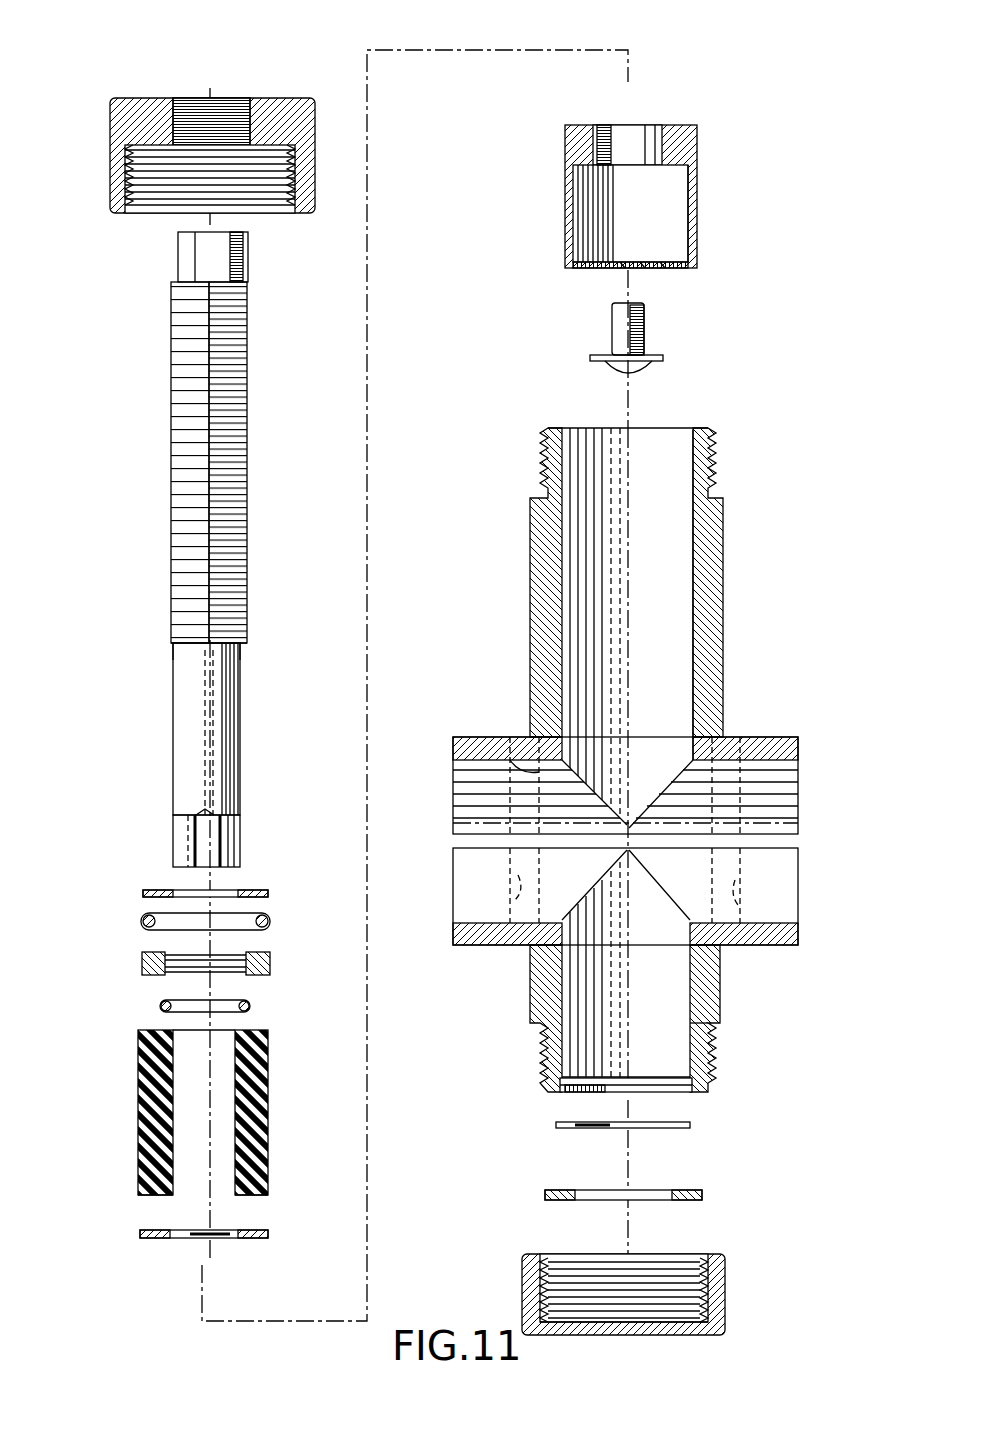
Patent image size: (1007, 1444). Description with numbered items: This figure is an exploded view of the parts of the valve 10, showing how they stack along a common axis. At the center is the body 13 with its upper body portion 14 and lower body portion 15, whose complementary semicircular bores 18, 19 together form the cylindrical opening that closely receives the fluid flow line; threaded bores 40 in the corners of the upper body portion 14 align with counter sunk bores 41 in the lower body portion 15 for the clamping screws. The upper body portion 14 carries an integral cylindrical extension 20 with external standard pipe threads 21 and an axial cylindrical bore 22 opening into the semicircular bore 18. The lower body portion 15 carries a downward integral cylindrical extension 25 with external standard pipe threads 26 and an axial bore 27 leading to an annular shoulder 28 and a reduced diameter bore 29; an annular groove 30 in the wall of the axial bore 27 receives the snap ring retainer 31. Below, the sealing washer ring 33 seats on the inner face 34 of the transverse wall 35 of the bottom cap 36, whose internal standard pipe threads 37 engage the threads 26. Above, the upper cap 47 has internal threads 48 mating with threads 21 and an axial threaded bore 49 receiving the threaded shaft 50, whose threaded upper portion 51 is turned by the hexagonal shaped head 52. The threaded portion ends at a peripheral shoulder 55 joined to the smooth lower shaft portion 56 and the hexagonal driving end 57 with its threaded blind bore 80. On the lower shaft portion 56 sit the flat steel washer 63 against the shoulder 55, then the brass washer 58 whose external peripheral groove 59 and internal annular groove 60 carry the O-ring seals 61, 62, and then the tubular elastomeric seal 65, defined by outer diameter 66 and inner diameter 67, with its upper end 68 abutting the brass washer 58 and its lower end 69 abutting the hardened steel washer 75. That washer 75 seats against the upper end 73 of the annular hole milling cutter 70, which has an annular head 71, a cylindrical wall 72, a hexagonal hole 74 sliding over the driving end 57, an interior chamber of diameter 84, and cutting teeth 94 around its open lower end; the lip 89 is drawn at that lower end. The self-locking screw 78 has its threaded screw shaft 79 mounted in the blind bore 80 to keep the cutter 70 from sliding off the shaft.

The valve 10 is at (748, 698).
The body 13 is at (512, 737).
The upper body portion 14 is at (455, 740).
The lower body portion 15 is at (485, 900).
The semicircular bore 18 is at (490, 765).
The semicircular bore 19 is at (770, 945).
The integral cylindrical extension 20 is at (540, 575).
The external standard pipe threads 21 is at (712, 458).
The cylindrical bore 22 is at (700, 578).
The integral cylindrical extension 25 is at (720, 985).
The external standard pipe threads 26 is at (712, 1075).
The axial bore 27 is at (703, 1040).
The annular shoulder 28 is at (690, 1086).
The reduced diameter bore 29 is at (573, 1093).
The annular groove 30 is at (638, 1078).
The snap ring retainer 31 is at (675, 1128).
The sealing washer ring 33 is at (555, 1190).
The inner face 34 is at (540, 1298).
The transverse wall 35 is at (665, 1335).
The bottom cap 36 is at (730, 1302).
The internal standard pipe threads 37 is at (540, 1265).
The threaded bores 40 is at (520, 730).
The counter sunk bores 41 is at (510, 868).
The upper cap 47 is at (110, 120).
The internal threads 48 is at (128, 158).
The axial threaded bore 49 is at (232, 108).
The threaded shaft 50 is at (171, 364).
The threaded upper portion 51 is at (190, 397).
The hexagonal shaped head 52 is at (178, 255).
The peripheral shoulder 55 is at (200, 646).
The lower shaft portion 56 is at (190, 727).
The driving end 57 is at (178, 848).
The brass washer 58 is at (264, 954).
The external peripheral groove 59 is at (145, 963).
The internal annular groove 60 is at (260, 965).
The O-ring seal 61 is at (150, 921).
The O-ring seal 62 is at (160, 1005).
The flat steel washer 63 is at (255, 890).
The tubular elastomeric seal 65 is at (138, 1144).
The outer diameter 66 is at (268, 1105).
The inner diameter 67 is at (230, 1172).
The upper end 68 is at (250, 1034).
The lower end 69 is at (160, 1193).
The annular hole milling cutter 70 is at (566, 176).
The annular head 71 is at (575, 145).
The cylindrical wall 72 is at (568, 220).
The upper end 73 is at (590, 125).
The hexagonal hole 74 is at (652, 165).
The hardened steel washer 75 is at (160, 1234).
The self-locking screw 78 is at (660, 357).
The threaded screw shaft 79 is at (615, 320).
The threaded blind bore 80 is at (203, 812).
The diameter 84 is at (690, 228).
The cap lip 89 is at (580, 270).
The cutting teeth 94 is at (655, 266).